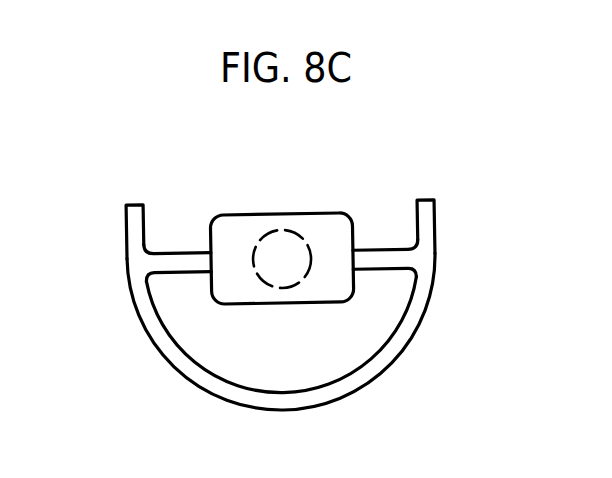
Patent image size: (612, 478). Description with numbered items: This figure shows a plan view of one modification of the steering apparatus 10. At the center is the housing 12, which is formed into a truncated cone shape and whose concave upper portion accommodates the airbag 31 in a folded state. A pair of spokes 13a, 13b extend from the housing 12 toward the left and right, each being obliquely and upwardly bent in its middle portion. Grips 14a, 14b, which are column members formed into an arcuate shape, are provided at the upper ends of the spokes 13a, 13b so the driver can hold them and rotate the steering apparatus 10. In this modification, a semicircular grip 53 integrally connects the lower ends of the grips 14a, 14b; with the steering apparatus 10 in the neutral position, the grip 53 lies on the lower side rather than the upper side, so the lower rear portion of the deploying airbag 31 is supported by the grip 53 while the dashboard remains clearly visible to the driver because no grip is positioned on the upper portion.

The steering apparatus 10 is at (378, 184).
The housing 12 is at (243, 303).
The spoke 13a is at (176, 251).
The spoke 13b is at (390, 248).
The grip 14a is at (127, 243).
The grip 14b is at (435, 243).
The airbag 31 is at (283, 290).
The semicircular grip 53 is at (328, 402).